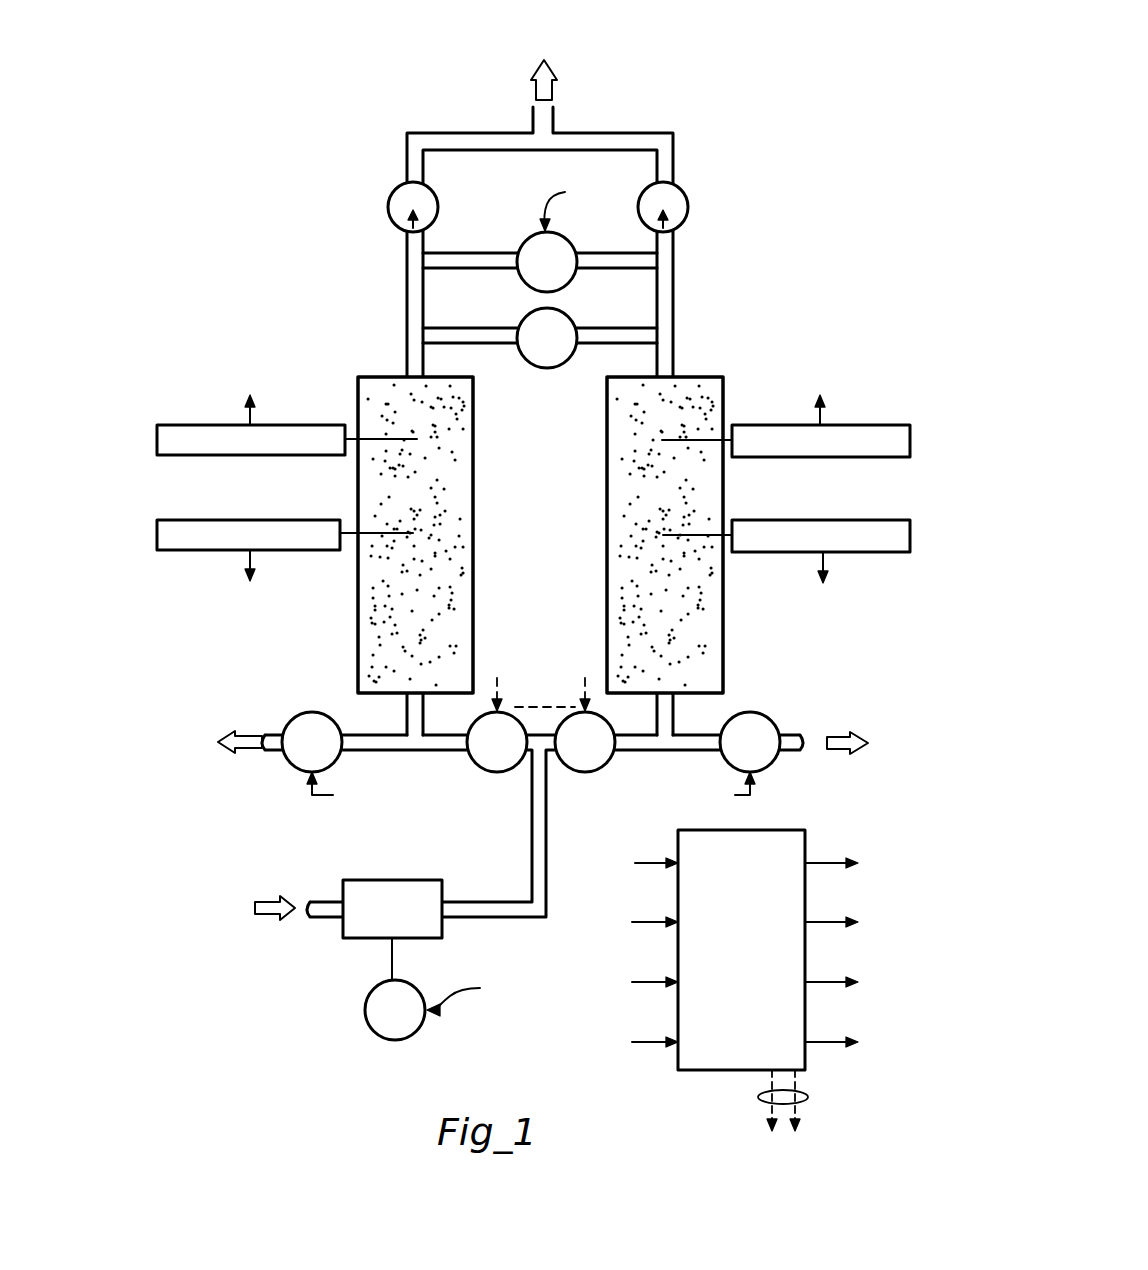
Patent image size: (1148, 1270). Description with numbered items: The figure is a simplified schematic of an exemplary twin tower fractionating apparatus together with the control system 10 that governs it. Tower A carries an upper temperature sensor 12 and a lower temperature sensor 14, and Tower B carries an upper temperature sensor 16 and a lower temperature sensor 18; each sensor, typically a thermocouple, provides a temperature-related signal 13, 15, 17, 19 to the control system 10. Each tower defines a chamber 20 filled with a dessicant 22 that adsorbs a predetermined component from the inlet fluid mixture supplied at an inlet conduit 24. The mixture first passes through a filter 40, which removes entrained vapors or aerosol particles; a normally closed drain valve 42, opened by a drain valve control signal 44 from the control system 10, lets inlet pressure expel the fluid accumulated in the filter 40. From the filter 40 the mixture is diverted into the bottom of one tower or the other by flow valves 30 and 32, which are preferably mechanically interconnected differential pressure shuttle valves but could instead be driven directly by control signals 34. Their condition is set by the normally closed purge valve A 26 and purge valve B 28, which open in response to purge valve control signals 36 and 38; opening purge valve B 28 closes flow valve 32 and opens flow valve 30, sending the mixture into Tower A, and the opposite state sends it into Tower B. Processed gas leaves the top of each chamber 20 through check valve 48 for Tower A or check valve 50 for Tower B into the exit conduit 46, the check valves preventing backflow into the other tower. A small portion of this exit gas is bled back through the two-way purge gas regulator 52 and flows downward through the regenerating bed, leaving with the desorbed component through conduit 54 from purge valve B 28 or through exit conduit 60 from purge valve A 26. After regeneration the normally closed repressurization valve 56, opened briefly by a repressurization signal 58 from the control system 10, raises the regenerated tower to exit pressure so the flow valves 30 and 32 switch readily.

The control system 10 is at (701, 1070).
The upper temperature sensor 12 is at (200, 425).
The signal 13 is at (250, 412).
The lower temperature sensor 14 is at (204, 550).
The signal 15 is at (257, 570).
The upper temperature sensor 16 is at (885, 425).
The signal 17 is at (816, 412).
The lower temperature sensor 18 is at (880, 552).
The signal 19 is at (818, 580).
The chamber 20 is at (473, 497).
The dessicant 22 is at (455, 580).
The inlet conduit 24 is at (330, 902).
The purge valve A 26 is at (296, 768).
The purge valve B 28 is at (758, 714).
The flow valve 30 is at (477, 768).
The flow valve 32 is at (601, 768).
The control signals 34 is at (498, 700).
The purge valve control signal 36 is at (845, 838).
The purge valve control signal 38 is at (826, 922).
The filter 40 is at (398, 880).
The drain valve 42 is at (373, 1031).
The drain valve control signal 44 is at (834, 982).
The exit conduit 46 is at (531, 118).
The check valve 48 is at (388, 204).
The check valve 50 is at (689, 207).
The purge gas regulator 52 is at (526, 320).
The conduit 54 is at (794, 734).
The repressurization valve 56 is at (524, 240).
The repressurization signal 58 is at (828, 1042).
The exit conduit 60 is at (270, 735).